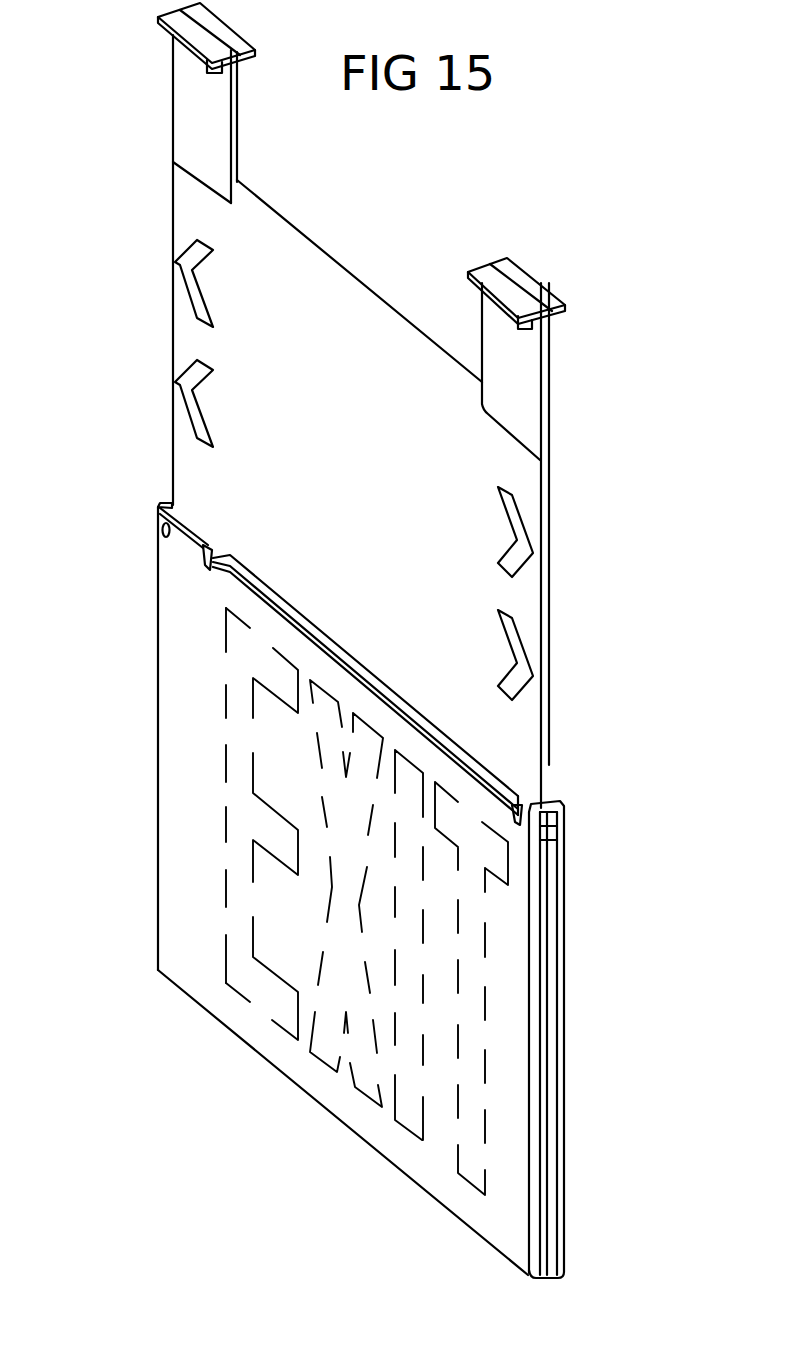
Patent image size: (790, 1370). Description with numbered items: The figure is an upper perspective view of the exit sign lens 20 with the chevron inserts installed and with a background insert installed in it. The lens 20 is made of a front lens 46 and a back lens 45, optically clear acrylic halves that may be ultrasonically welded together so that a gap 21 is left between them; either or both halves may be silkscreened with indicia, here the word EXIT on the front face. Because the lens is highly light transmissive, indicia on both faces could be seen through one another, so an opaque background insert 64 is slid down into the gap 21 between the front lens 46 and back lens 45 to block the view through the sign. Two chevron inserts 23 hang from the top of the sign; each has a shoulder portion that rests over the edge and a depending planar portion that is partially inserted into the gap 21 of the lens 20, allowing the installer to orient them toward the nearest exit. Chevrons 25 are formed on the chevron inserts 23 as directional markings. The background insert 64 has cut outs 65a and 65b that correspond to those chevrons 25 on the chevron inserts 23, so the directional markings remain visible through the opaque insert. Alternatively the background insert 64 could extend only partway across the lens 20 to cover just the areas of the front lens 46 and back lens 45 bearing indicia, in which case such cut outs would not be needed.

The lens 20 is at (510, 948).
The gap 21 is at (550, 803).
The chevron insert 23 is at (218, 126).
The chevron 25 is at (175, 262).
The back lens 45 is at (568, 1060).
The front lens 46 is at (493, 1212).
The background insert 64 is at (368, 283).
The cut out 65a is at (175, 383).
The cut out 65b is at (522, 688).